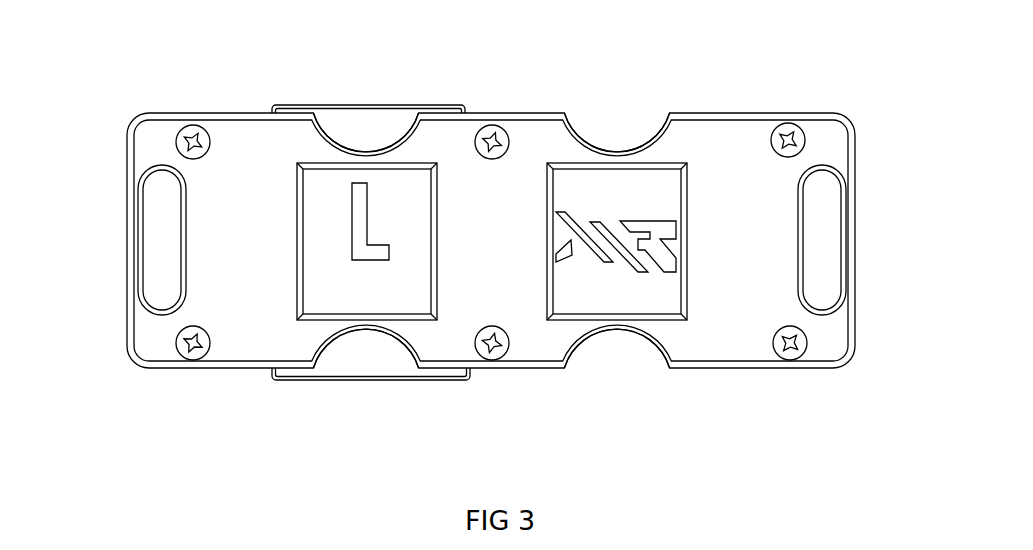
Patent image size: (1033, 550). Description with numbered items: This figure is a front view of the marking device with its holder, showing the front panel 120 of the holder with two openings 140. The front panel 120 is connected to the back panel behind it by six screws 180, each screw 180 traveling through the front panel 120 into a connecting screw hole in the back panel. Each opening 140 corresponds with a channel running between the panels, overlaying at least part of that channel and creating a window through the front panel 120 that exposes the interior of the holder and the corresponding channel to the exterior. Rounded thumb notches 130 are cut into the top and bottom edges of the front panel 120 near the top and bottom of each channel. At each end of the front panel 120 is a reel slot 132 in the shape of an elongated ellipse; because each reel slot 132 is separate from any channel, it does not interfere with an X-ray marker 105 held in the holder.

The X-ray marker 105 is at (314, 103).
The front panel 120 is at (730, 367).
The thumb notch 130 is at (360, 128).
The reel slot 132 is at (158, 239).
The opening 140 is at (547, 277).
The screw 180 is at (492, 126).